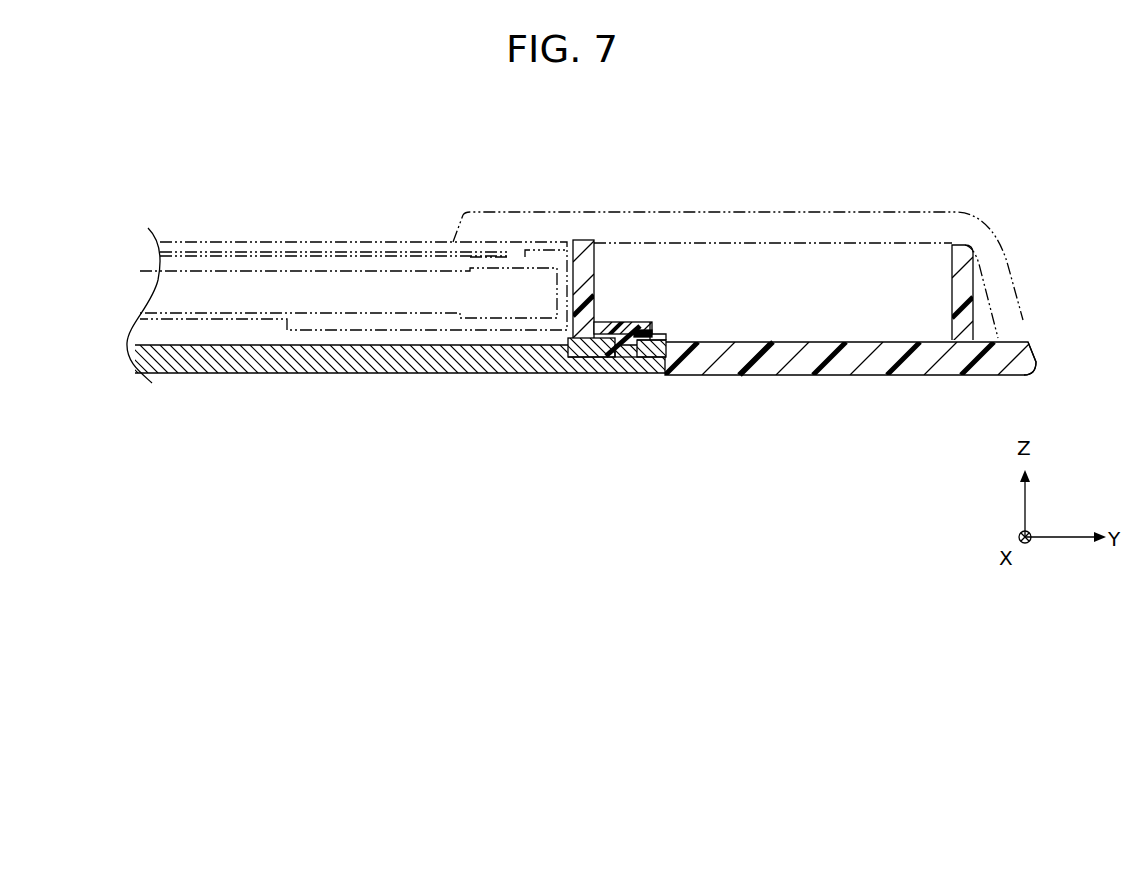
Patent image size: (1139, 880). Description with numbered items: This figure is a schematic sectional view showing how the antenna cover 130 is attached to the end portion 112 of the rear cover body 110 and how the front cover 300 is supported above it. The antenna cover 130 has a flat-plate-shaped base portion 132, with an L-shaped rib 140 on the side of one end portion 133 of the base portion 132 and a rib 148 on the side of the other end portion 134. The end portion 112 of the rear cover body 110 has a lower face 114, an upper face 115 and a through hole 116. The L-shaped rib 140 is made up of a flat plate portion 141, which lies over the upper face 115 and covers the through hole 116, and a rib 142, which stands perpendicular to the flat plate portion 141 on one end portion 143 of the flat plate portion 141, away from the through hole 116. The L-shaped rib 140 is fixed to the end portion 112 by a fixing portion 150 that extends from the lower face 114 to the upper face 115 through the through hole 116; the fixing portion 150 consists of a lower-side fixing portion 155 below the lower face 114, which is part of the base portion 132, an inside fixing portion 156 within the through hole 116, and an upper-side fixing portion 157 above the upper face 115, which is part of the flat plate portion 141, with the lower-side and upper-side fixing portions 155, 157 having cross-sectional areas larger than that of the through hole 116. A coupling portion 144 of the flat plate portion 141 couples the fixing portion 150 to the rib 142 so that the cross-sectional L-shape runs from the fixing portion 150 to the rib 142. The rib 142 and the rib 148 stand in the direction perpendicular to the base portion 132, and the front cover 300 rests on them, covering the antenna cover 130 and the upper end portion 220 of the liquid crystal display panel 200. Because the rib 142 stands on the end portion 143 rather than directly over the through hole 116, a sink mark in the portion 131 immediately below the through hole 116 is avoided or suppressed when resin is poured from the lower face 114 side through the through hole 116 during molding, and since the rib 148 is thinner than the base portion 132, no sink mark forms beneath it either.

The rear cover body 110 is at (316, 376).
The end portion 112 is at (641, 362).
The lower face 114 is at (655, 362).
The upper face 115 is at (656, 345).
The through hole 116 is at (618, 362).
The antenna cover 130 is at (850, 389).
The portion immediately below the through hole 131 is at (623, 362).
The base portion 132 is at (767, 376).
The end portion 133 is at (607, 358).
The end portion 134 is at (952, 376).
The L-shaped rib 140 is at (597, 293).
The flat plate portion 141 is at (650, 322).
The rib 142 is at (585, 262).
The end portion 143 is at (600, 355).
The coupling portion 144 is at (608, 328).
The rib 148 is at (962, 283).
The fixing portion 150 is at (648, 325).
The lower-side fixing portion 155 is at (630, 362).
The inside fixing portion 156 is at (613, 360).
The upper-side fixing portion 157 is at (658, 337).
The liquid crystal display panel 200 is at (318, 283).
The upper end portion 220 is at (520, 252).
The front cover 300 is at (818, 222).